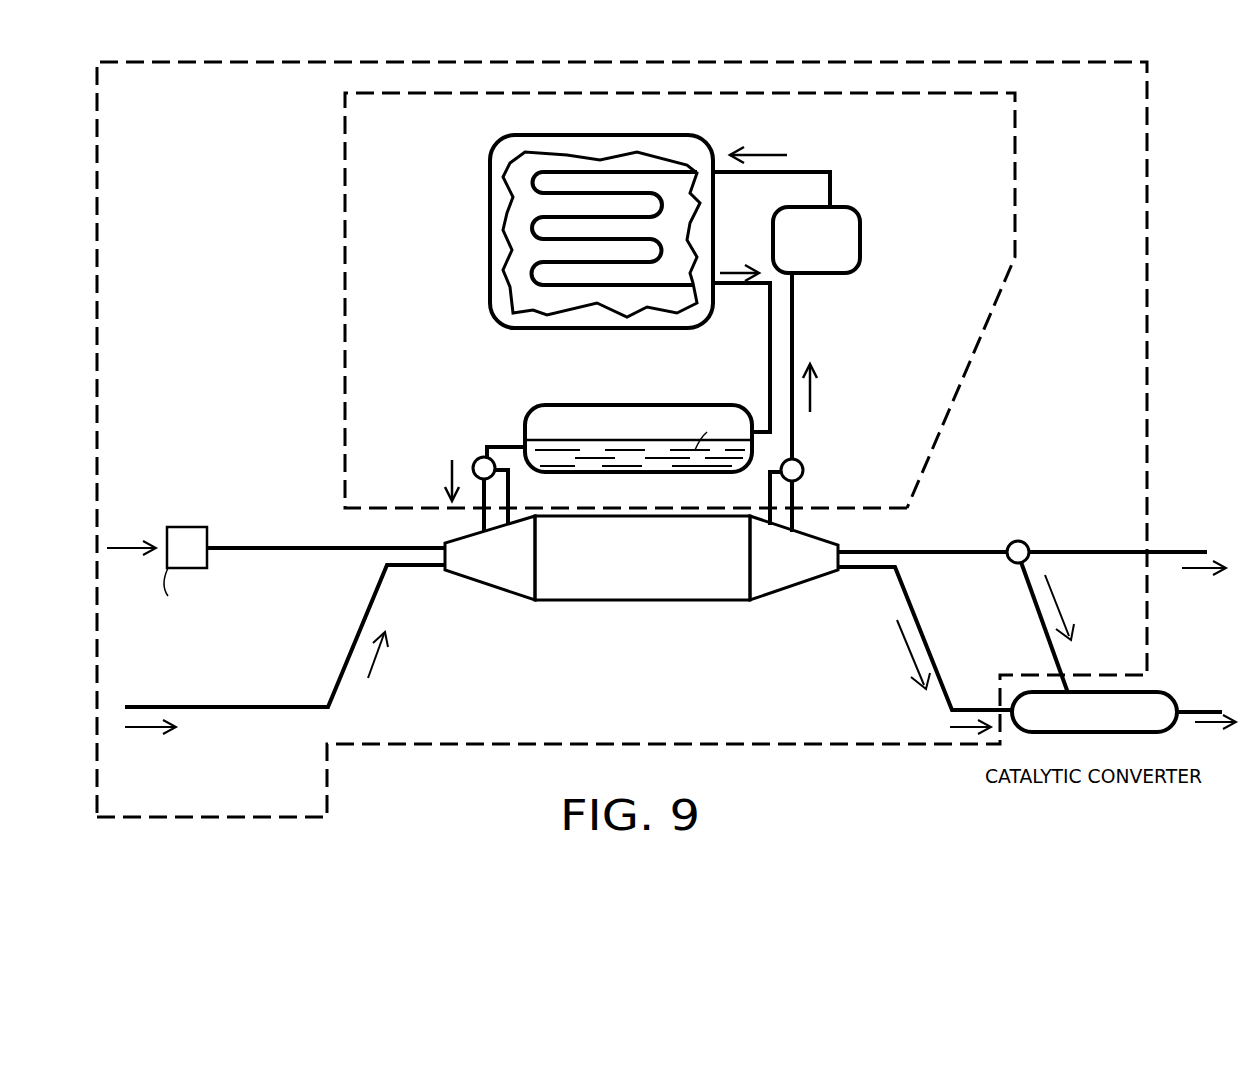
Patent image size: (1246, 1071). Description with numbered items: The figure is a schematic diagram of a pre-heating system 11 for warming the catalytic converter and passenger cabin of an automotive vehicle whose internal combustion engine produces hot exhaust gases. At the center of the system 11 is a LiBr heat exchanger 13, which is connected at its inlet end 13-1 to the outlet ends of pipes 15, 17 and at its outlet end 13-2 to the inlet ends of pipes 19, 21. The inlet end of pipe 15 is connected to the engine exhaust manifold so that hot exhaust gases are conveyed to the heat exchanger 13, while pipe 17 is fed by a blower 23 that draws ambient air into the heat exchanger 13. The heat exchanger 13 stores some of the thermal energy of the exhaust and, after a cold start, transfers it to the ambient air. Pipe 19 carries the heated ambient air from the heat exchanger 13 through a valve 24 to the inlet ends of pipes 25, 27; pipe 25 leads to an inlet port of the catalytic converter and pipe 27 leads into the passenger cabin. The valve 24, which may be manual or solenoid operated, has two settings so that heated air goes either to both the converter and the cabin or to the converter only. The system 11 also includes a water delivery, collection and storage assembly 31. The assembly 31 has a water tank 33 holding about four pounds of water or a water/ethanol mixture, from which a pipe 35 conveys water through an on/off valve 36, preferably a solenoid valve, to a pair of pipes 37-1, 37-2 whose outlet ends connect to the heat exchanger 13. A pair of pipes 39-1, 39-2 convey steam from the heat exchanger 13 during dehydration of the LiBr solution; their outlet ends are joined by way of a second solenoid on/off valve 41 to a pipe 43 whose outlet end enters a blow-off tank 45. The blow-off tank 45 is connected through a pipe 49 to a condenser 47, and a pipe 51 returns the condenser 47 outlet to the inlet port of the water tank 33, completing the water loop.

The pre-heating system 11 is at (325, 57).
The LiBr heat exchanger 13 is at (640, 585).
The inlet end of heat exchanger 13-1 is at (450, 580).
The outlet end of heat exchanger 13-2 is at (810, 592).
The exhaust pipe 15 is at (355, 639).
The ambient air pipe 17 is at (320, 545).
The heated air pipe 19 is at (940, 549).
The exhaust outlet pipe 21 is at (915, 612).
The blower 23 is at (199, 560).
The valve 24 is at (1010, 560).
The catalytic converter pipe 25 is at (1043, 632).
The cabin pipe 27 is at (1130, 561).
The water delivery, collection and storage assembly 31 is at (336, 277).
The water tank 33 is at (580, 413).
The water pipe 35 is at (500, 445).
The on/off valve 36 is at (480, 458).
The water feed pipe 37-1 is at (483, 520).
The water feed pipe 37-2 is at (510, 494).
The steam pipe 39-1 is at (797, 490).
The steam pipe 39-2 is at (770, 492).
The second solenoid on/off valve 41 is at (805, 470).
The steam pipe to blow-off tank 43 is at (794, 326).
The blow-off tank 45 is at (829, 252).
The condenser 47 is at (497, 205).
The blow-off tank to condenser pipe 49 is at (833, 172).
The condensate return pipe 51 is at (767, 347).